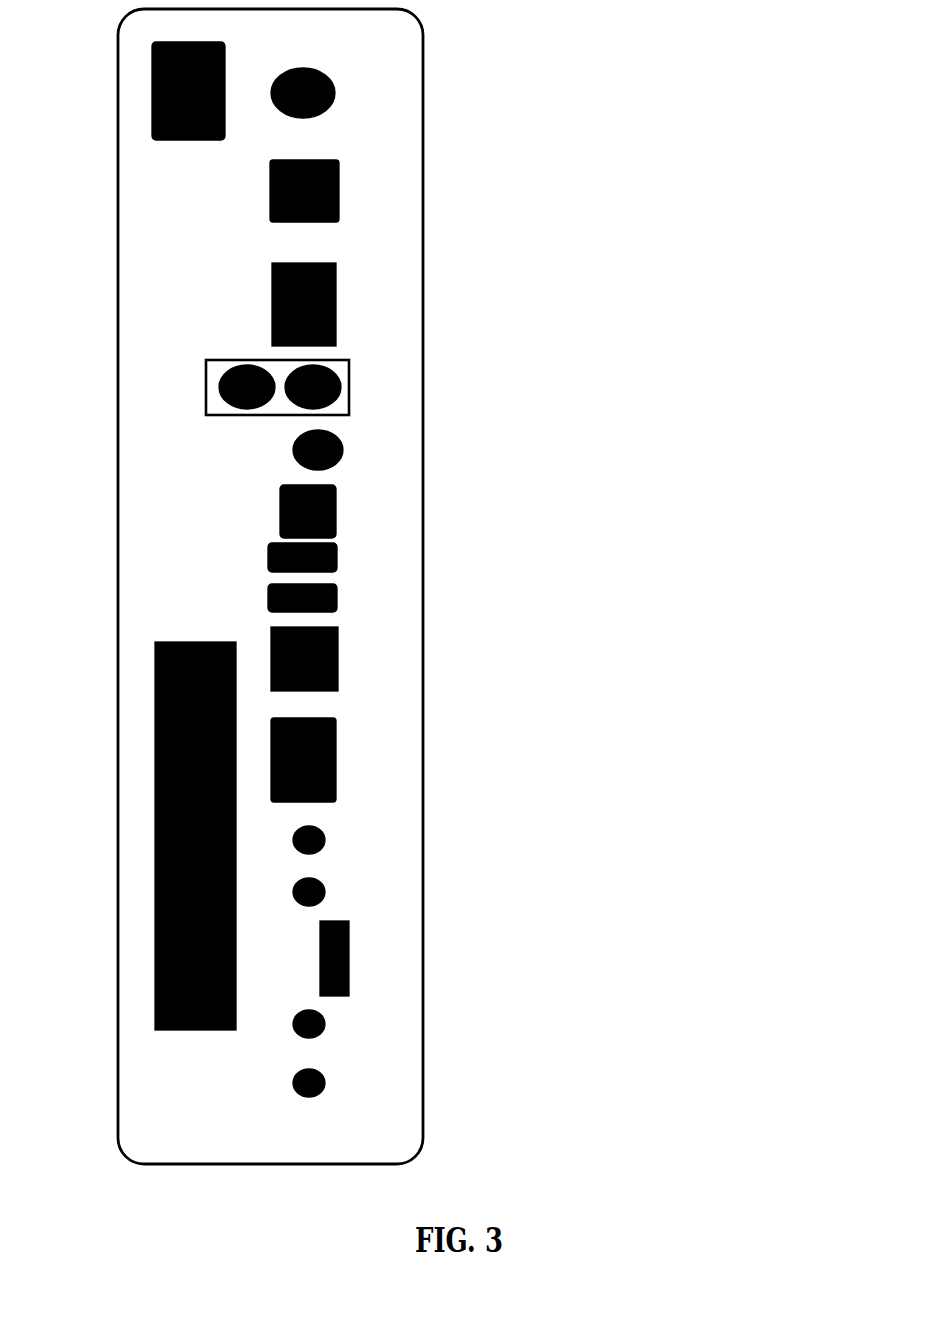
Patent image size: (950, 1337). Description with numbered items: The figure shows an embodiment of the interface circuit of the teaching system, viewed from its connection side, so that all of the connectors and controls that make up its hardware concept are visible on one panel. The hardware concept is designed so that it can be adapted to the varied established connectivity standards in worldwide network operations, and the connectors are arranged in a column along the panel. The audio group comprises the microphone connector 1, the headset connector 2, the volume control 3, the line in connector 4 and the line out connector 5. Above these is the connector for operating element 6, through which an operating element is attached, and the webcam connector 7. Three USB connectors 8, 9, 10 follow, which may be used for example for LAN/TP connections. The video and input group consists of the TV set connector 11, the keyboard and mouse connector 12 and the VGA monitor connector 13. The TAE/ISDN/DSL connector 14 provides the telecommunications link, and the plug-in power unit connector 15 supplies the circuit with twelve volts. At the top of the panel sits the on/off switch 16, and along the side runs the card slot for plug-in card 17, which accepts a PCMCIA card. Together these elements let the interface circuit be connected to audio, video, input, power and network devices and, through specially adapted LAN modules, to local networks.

The microphone connector 1 is at (325, 1083).
The headset connector 2 is at (325, 1024).
The volume control 3 is at (349, 959).
The line in connector 4 is at (325, 891).
The line out connector 5 is at (325, 840).
The connector for operating element 6 is at (336, 760).
The webcam connector 7 is at (338, 658).
The USB connector 8 is at (337, 597).
The USB connector 9 is at (337, 556).
The USB connector 10 is at (336, 511).
The TV set connector 11 is at (343, 450).
The keyboard and mouse connector 12 is at (349, 386).
The VGA monitor connector 13 is at (336, 303).
The TAE/ISDN/DSL connector 14 is at (339, 190).
The plug-in power unit connector 15 is at (335, 93).
The on/off switch 16 is at (152, 92).
The card slot for plug-in card 17 is at (155, 835).